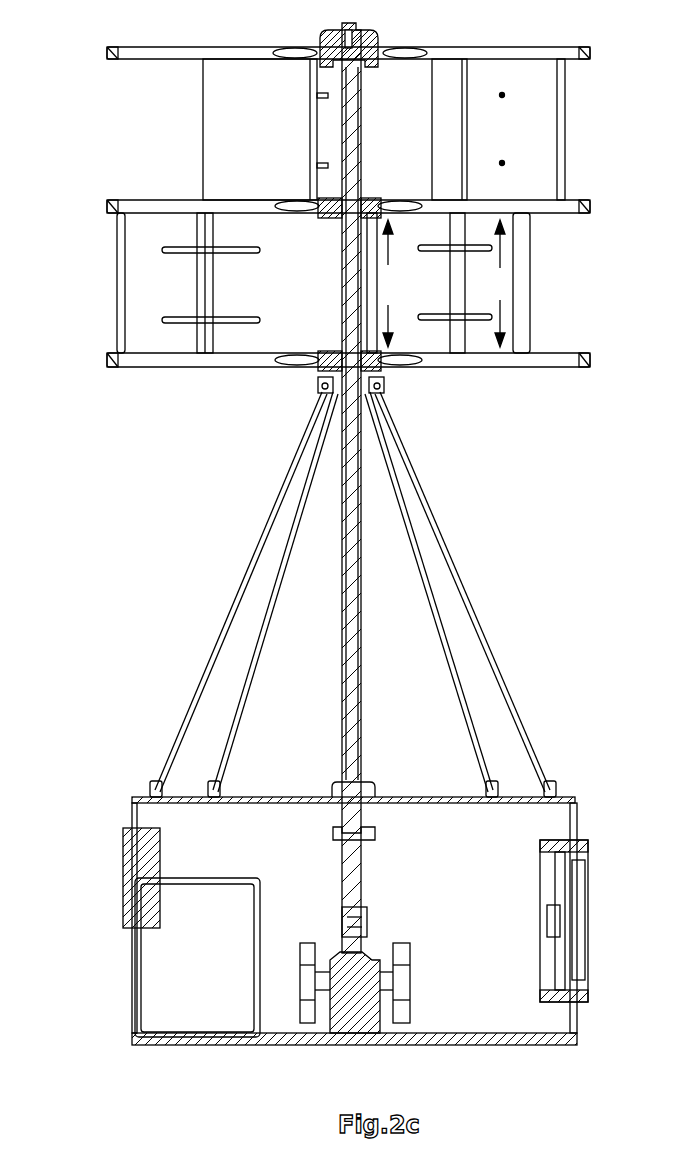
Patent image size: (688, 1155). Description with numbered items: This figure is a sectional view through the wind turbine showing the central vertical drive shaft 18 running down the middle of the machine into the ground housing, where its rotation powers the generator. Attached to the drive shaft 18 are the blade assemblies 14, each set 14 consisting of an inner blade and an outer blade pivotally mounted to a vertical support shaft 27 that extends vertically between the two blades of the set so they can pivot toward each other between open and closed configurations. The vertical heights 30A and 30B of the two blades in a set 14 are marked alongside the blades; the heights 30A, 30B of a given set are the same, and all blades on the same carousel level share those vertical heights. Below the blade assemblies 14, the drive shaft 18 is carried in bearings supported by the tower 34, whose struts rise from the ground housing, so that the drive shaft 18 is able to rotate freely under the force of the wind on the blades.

The blade assembly 14 is at (492, 330).
The drive shaft 18 is at (350, 645).
The vertical support shaft 27 is at (210, 290).
The vertical height of innermost blade 30A is at (402, 283).
The vertical height of outermost blade 30B is at (490, 283).
The tower 34 is at (478, 573).